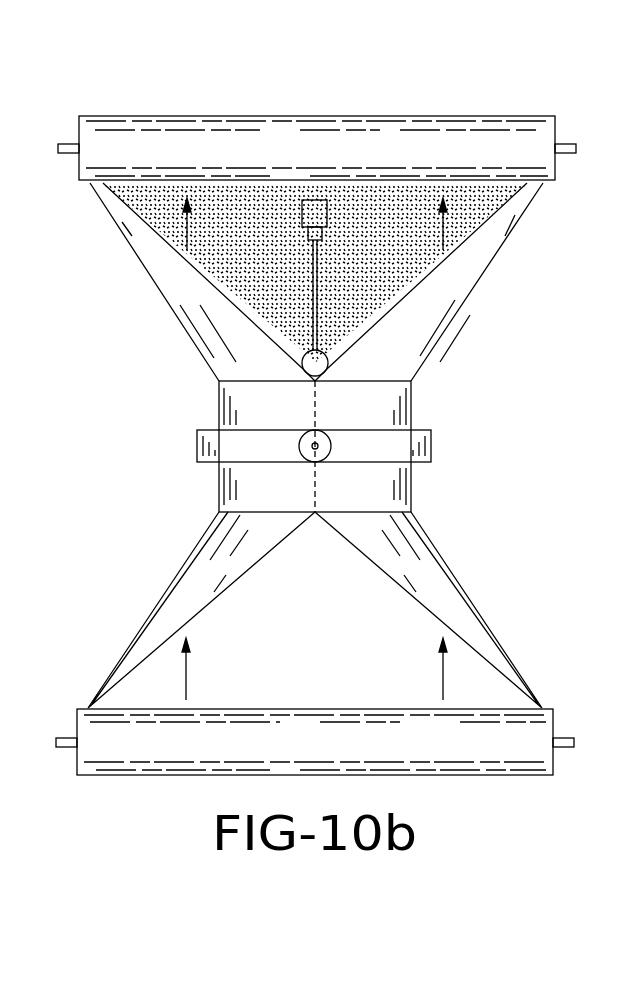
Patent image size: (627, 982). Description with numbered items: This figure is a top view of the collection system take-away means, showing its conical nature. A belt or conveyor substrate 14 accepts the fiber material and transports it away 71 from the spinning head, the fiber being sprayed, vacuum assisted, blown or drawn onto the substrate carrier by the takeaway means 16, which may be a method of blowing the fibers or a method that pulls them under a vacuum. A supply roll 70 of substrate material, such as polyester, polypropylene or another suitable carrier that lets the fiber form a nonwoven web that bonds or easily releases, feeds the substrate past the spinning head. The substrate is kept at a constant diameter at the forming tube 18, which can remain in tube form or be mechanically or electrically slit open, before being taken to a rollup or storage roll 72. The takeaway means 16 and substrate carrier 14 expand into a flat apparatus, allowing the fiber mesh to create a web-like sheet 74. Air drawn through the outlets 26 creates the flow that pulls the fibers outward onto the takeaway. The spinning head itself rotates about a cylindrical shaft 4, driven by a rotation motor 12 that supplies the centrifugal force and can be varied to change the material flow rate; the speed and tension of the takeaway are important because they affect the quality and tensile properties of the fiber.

The rollup or storage roll 72 is at (128, 152).
The supply roll 70 is at (137, 737).
The rotation motor 12 is at (304, 210).
The cylindrical shaft 4 is at (318, 290).
The web-like sheet 74 is at (390, 232).
The transport away direction 71 is at (187, 235).
The takeaway means 16 is at (207, 300).
The belt or conveyor substrate 14 is at (200, 592).
The forming tube 18 is at (252, 477).
The outlets 26 is at (235, 443).